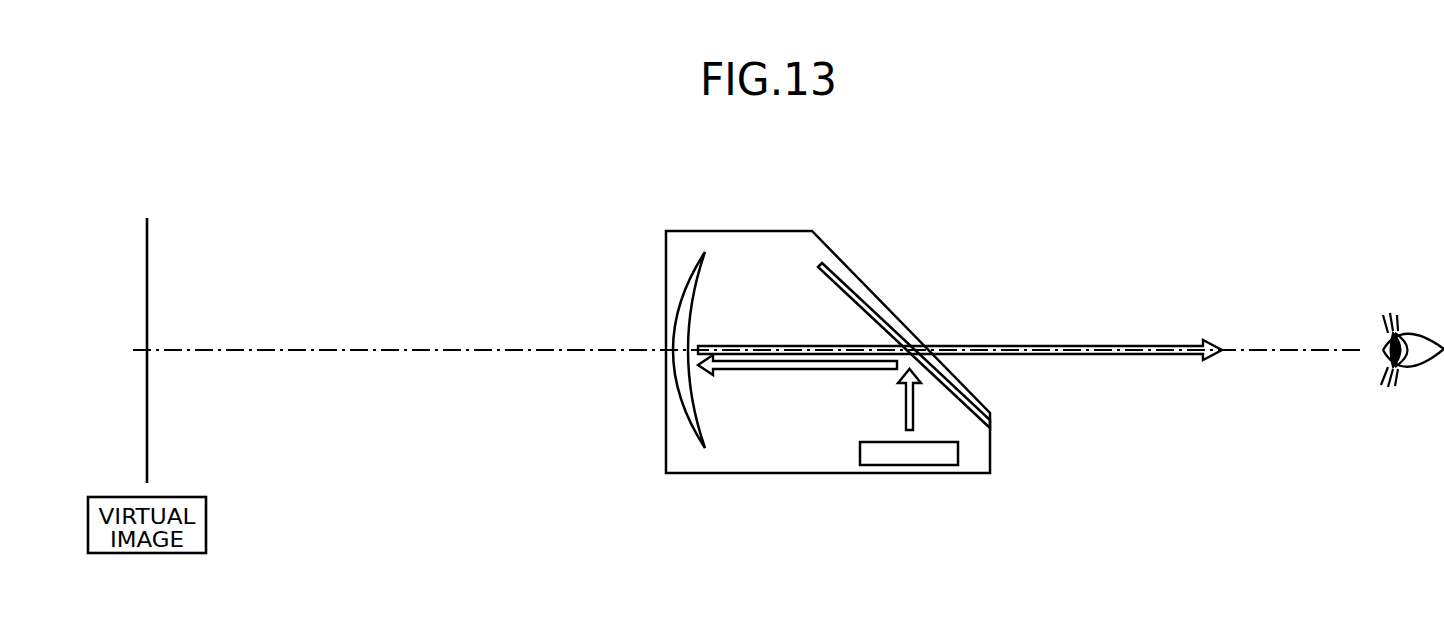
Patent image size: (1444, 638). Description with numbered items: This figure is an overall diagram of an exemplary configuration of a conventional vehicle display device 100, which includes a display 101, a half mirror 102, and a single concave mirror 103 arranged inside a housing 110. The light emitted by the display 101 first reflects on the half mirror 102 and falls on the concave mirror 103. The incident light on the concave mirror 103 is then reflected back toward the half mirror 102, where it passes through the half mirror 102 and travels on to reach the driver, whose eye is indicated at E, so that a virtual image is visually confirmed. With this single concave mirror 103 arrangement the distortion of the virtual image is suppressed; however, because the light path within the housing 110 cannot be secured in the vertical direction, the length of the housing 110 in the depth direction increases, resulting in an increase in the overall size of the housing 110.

The vehicle display device 100 is at (861, 177).
The display 101 is at (910, 452).
The half mirror 102 is at (858, 296).
The concave mirror 103 is at (679, 279).
The housing 110 is at (752, 452).
The eye of observer E is at (1383, 353).